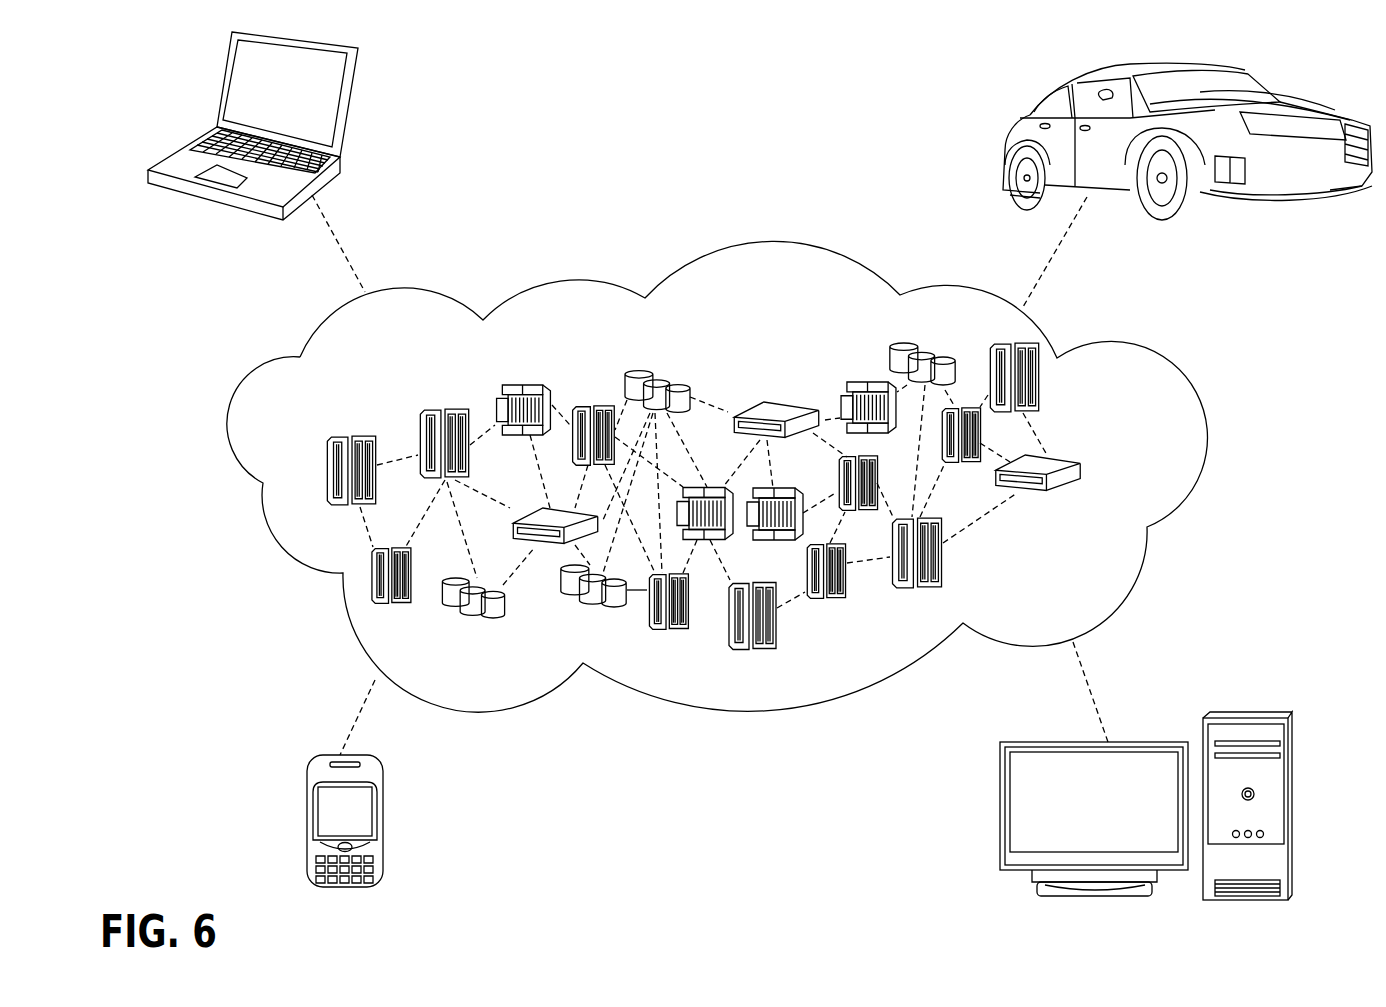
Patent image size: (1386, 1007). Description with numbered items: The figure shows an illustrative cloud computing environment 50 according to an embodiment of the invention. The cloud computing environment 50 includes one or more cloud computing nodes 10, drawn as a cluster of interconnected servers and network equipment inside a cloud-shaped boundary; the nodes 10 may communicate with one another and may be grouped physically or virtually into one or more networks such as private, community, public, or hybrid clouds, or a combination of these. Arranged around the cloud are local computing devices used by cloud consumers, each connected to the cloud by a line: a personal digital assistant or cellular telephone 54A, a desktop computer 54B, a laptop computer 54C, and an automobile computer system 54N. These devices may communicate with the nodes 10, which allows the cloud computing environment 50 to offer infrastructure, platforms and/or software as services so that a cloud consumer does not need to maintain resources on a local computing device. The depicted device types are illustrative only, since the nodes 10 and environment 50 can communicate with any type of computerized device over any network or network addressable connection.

The cloud computing nodes 10 is at (760, 466).
The cloud computing environment 50 is at (1160, 372).
The personal digital assistant or cellular telephone 54A is at (303, 827).
The desktop computer 54B is at (1250, 712).
The laptop computer 54C is at (353, 108).
The automobile computer system 54N is at (1013, 120).